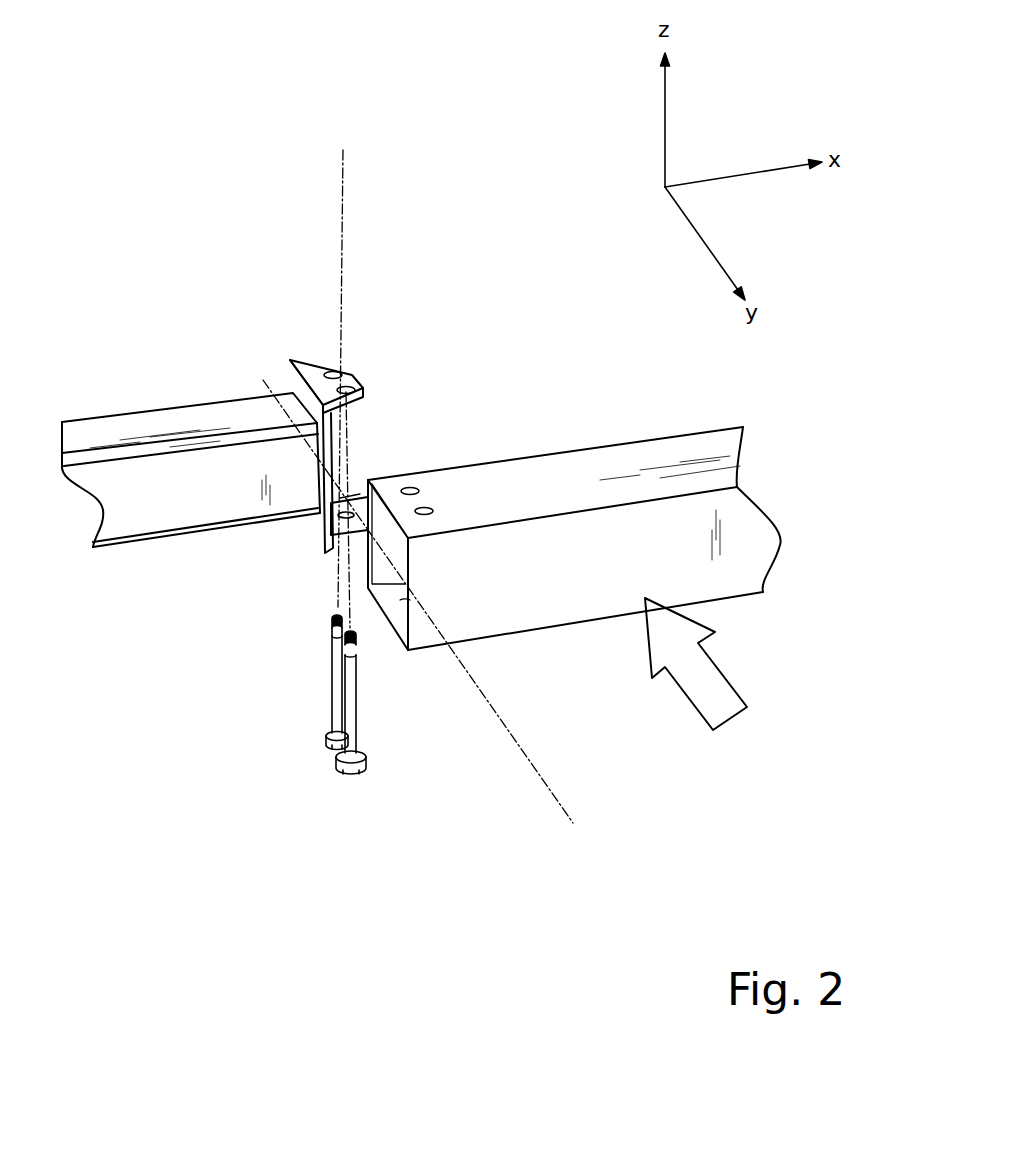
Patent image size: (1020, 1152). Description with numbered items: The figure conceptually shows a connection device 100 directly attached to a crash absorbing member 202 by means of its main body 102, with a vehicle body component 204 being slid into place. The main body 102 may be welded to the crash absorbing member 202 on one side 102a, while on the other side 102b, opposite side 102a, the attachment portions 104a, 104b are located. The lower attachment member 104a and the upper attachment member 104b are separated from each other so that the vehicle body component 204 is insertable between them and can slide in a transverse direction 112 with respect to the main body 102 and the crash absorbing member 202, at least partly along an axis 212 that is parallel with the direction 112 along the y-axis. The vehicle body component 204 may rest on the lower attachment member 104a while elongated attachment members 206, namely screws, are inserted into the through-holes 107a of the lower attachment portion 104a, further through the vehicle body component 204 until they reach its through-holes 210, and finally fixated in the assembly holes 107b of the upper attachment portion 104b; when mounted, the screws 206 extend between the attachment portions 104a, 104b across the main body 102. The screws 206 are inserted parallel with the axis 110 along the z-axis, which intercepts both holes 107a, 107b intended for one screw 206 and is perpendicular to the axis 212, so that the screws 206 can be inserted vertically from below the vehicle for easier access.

The connection device 100 is at (273, 337).
The main body 102 is at (319, 422).
The side of main body 102a is at (285, 380).
The other side of main body 102b is at (368, 420).
The lower attachment member 104a is at (354, 505).
The upper attachment member 104b is at (333, 368).
The through-holes 107a is at (346, 492).
The assembly holes 107b is at (351, 383).
The axis 110 is at (343, 195).
The transverse direction 112 is at (723, 675).
The crash absorbing member 202 is at (222, 503).
The vehicle body component 204 is at (537, 591).
The elongated attachment members 206 is at (320, 772).
The through-holes 210 is at (430, 507).
The axis 212 is at (532, 767).